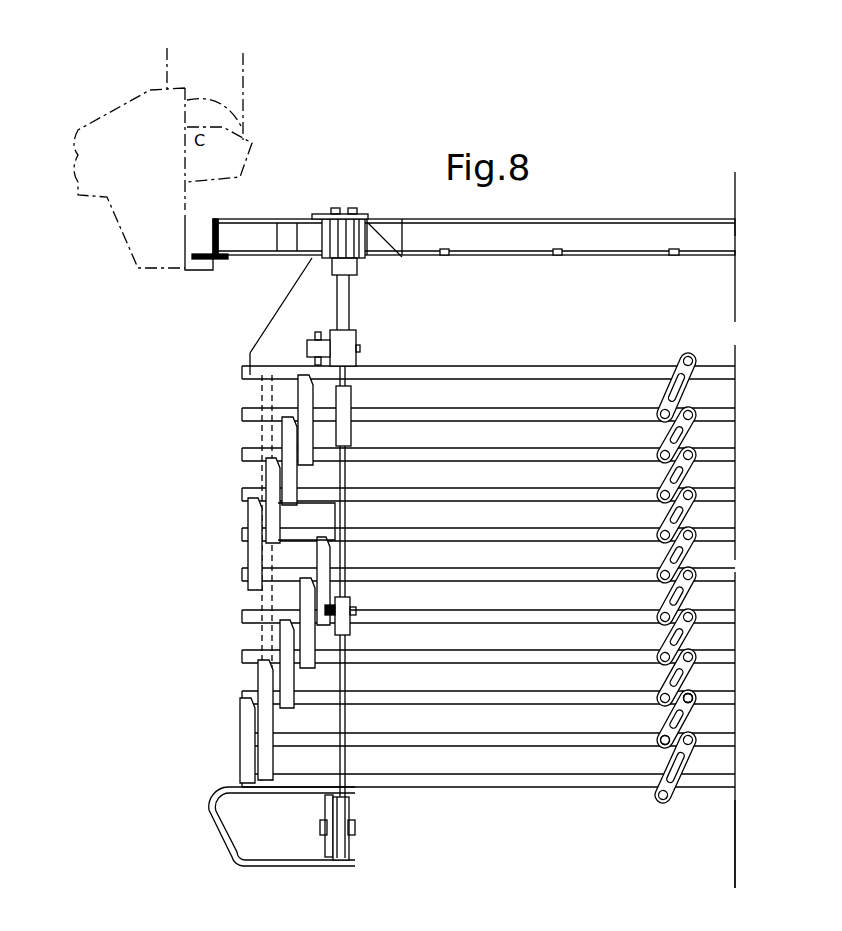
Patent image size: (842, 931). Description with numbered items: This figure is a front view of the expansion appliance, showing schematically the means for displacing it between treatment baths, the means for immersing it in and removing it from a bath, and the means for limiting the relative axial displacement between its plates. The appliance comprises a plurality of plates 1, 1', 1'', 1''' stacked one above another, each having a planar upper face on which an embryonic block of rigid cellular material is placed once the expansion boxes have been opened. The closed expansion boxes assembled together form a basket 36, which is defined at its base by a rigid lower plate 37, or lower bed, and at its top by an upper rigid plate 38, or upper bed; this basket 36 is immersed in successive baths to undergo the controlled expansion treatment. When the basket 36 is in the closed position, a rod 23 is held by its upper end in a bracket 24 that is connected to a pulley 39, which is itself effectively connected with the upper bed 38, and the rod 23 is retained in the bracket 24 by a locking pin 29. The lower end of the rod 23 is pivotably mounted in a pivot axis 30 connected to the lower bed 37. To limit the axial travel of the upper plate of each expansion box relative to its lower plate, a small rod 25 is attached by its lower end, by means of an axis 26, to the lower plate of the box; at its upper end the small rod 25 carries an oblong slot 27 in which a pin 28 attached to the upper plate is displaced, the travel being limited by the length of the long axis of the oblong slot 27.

The plate 1 is at (488, 594).
The plate 1' is at (488, 591).
The plate 1'' is at (488, 590).
The plate 1''' is at (488, 590).
The rod 23 is at (340, 474).
The bracket 24 is at (344, 310).
The small rod 25 is at (672, 718).
The axis 26 is at (662, 746).
The oblong slot 27 is at (688, 708).
The pin 28 is at (692, 692).
The locking pin 29 is at (307, 349).
The pivot axis 30 is at (355, 862).
The basket 36 is at (740, 552).
The lower plate 37 is at (702, 826).
The upper rigid plate 38 is at (710, 291).
The pulley 39 is at (317, 218).